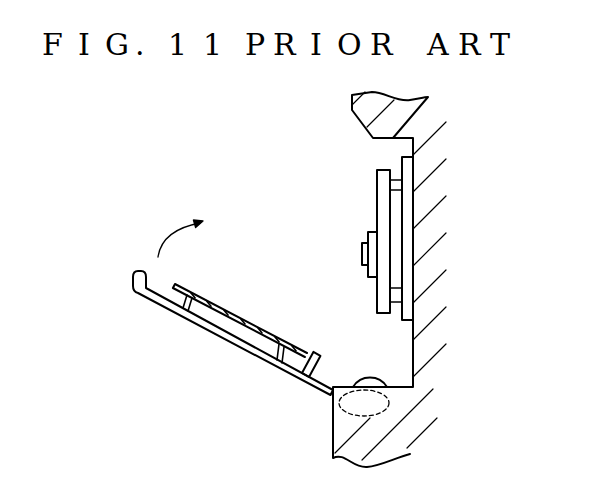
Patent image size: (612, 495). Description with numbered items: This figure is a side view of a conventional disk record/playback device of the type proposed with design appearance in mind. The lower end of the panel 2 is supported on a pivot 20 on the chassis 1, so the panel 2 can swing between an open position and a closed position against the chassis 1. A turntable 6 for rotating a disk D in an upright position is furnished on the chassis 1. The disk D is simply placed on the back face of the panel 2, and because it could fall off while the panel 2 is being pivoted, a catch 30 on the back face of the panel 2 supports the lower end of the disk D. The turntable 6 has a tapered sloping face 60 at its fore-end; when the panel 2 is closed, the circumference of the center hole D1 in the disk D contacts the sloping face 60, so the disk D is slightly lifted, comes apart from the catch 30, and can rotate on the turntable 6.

The chassis 1 is at (425, 177).
The panel 2 is at (153, 303).
The turntable 6 is at (370, 231).
The sloping face 60 is at (362, 248).
The pivot 20 is at (350, 410).
The catch 30 is at (320, 367).
The disk D is at (203, 298).
The center hole D1 is at (243, 320).